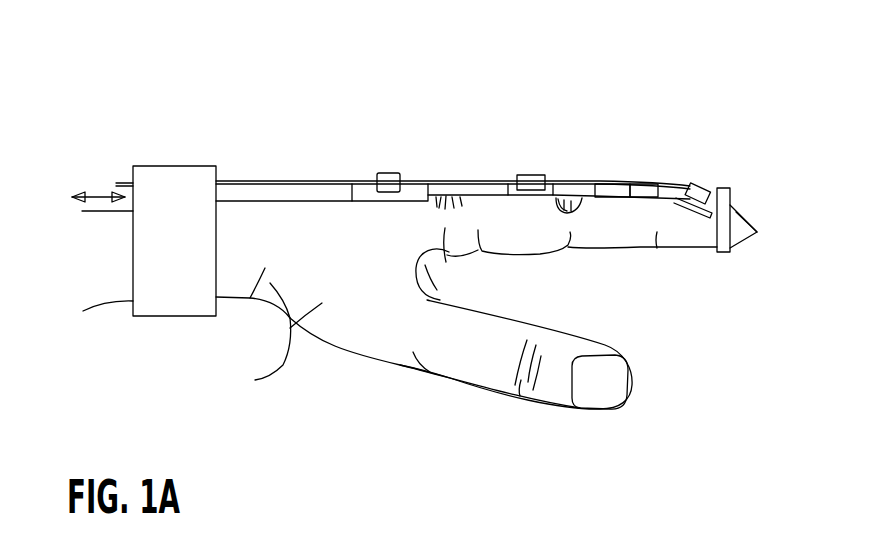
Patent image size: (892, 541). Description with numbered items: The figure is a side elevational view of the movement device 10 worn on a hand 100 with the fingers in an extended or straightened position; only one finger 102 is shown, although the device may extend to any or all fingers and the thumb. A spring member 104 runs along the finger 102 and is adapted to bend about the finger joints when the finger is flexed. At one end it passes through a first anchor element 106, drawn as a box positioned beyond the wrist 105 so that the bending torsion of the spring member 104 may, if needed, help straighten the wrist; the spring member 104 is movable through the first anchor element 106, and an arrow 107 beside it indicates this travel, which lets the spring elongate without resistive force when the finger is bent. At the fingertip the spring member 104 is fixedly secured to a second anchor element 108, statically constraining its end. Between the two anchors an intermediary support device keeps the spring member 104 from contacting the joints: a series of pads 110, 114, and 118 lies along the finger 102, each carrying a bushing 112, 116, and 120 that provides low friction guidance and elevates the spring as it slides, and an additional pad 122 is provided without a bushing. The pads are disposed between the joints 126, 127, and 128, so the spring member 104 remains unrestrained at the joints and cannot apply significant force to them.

The movement device 10 is at (342, 113).
The hand 100 is at (436, 302).
The finger 102 is at (757, 235).
The spring member 104 is at (304, 178).
The wrist 105 is at (228, 212).
The first anchor element 106 is at (158, 177).
The direction of movement 107 is at (99, 165).
The second anchor element 108 is at (726, 190).
The pad 110 is at (357, 178).
The bushing 112 is at (392, 173).
The pad 114 is at (507, 190).
The bushing 116 is at (530, 176).
The pad 118 is at (675, 190).
The bushing 120 is at (700, 186).
The pad 122 is at (622, 190).
The joint 126 is at (460, 178).
The joint 127 is at (570, 190).
The joint 128 is at (665, 190).